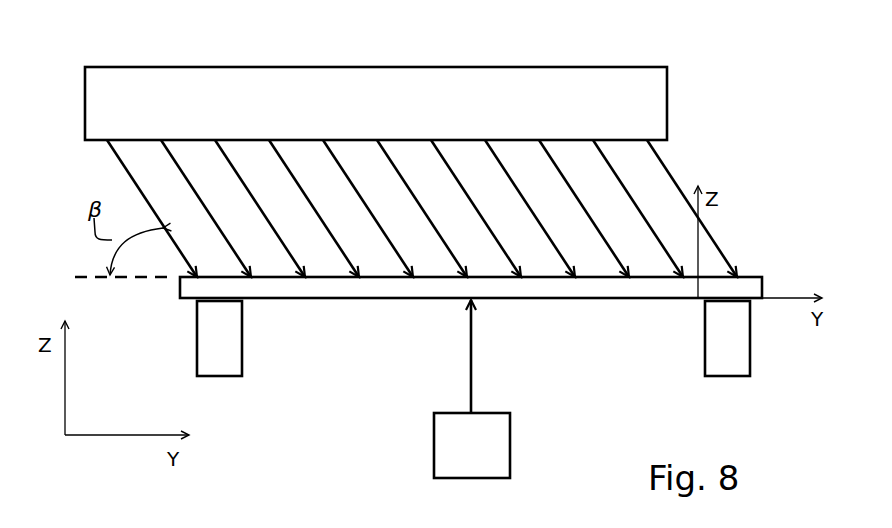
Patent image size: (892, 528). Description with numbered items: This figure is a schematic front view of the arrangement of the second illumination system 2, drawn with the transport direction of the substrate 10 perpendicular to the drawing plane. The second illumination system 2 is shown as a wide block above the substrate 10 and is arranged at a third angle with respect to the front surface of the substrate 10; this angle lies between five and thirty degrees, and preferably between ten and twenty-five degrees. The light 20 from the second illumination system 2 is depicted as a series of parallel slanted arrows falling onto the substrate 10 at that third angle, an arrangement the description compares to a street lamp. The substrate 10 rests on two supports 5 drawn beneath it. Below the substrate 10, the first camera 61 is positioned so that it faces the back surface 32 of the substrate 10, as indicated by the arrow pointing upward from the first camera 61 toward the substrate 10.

The second illumination system 2 is at (390, 119).
The light 20 is at (573, 185).
The substrate 10 is at (745, 287).
The supports 5 is at (223, 358).
The back surface 32 is at (564, 353).
The first camera 61 is at (475, 457).